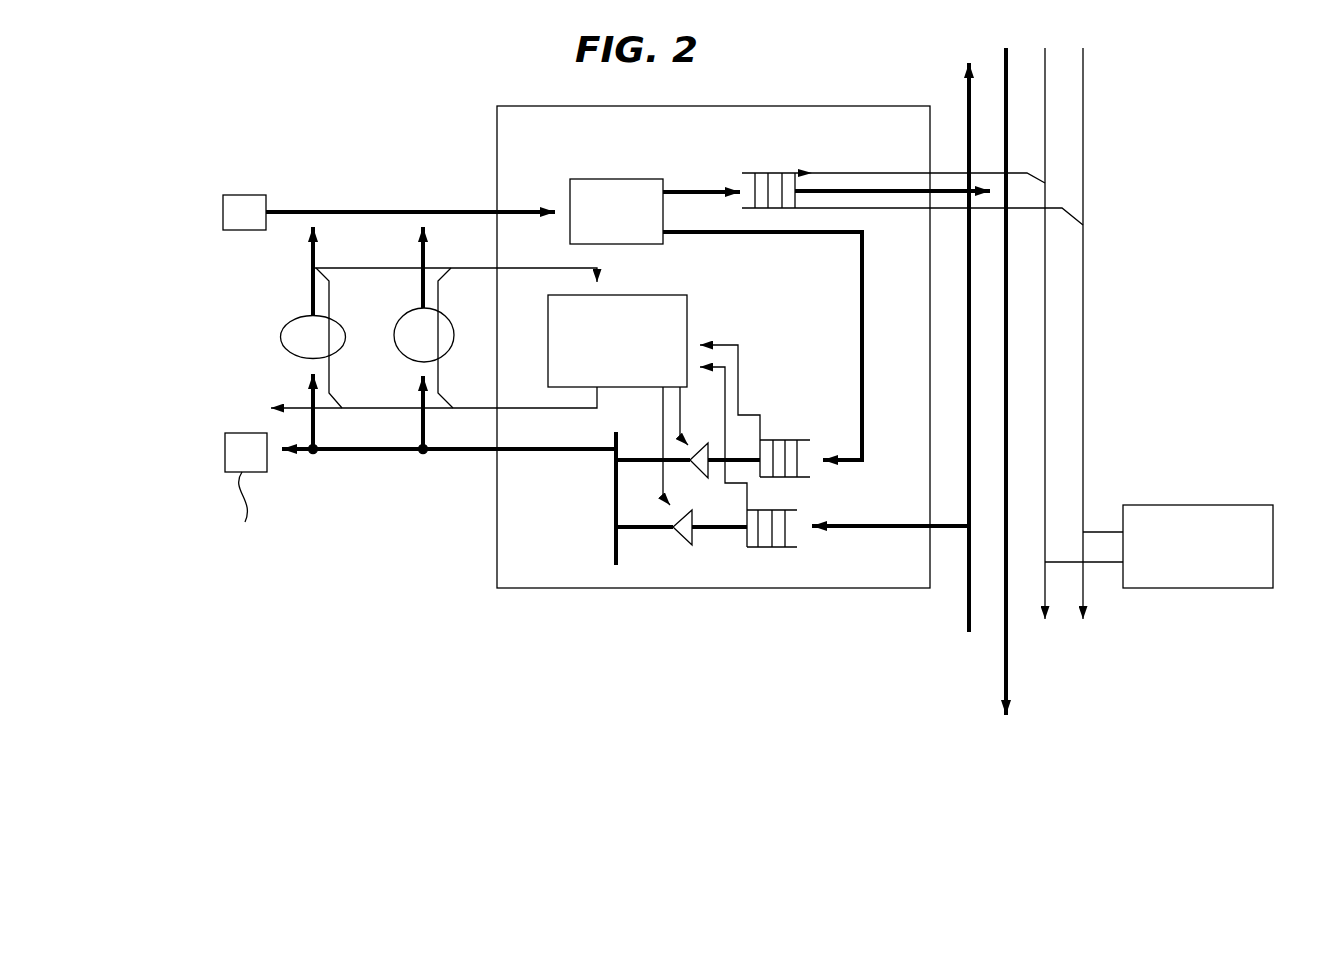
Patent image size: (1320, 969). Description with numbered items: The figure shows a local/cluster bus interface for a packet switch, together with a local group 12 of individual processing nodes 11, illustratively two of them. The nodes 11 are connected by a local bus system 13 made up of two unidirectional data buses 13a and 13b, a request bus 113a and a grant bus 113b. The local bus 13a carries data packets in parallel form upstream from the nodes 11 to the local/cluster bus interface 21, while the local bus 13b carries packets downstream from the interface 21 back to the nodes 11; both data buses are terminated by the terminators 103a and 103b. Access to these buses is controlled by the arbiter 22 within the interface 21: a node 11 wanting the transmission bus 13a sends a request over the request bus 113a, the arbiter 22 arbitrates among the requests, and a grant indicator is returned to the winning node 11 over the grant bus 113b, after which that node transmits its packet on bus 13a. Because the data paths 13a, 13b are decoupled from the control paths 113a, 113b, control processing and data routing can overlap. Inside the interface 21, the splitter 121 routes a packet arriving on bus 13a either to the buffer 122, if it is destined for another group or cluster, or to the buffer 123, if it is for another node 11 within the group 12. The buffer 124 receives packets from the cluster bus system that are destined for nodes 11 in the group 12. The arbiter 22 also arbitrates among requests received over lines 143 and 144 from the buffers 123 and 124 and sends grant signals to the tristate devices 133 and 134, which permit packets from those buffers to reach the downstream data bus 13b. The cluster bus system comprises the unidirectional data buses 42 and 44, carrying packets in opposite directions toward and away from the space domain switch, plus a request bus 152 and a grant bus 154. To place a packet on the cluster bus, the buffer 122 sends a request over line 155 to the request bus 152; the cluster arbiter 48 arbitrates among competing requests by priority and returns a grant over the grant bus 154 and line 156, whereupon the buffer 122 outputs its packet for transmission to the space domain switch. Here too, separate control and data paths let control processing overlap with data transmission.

The local group 12 is at (185, 279).
The local bus system 13 is at (305, 170).
The local bus 13a is at (400, 210).
The local bus 13b is at (408, 451).
The terminator 103a is at (223, 223).
The terminator 103b is at (225, 445).
The processing node 11 is at (290, 322).
The request bus 113a is at (393, 266).
The grant bus 113b is at (402, 410).
The local/cluster bus interface 21 is at (777, 107).
The splitter 121 is at (615, 179).
The buffer 122 is at (770, 173).
The line 156 is at (892, 171).
The line 155 is at (917, 208).
The unidirectional data bus 42 is at (1003, 253).
The unidirectional data bus 44 is at (967, 273).
The grant bus 154 is at (1044, 113).
The request bus 152 is at (1083, 152).
The cluster arbiter 48 is at (1228, 505).
The arbiter 22 is at (690, 295).
The line 143 is at (735, 344).
The line 144 is at (727, 385).
The buffer 123 is at (780, 440).
The buffer 124 is at (788, 510).
The tristate device 133 is at (716, 480).
The tristate device 134 is at (687, 543).